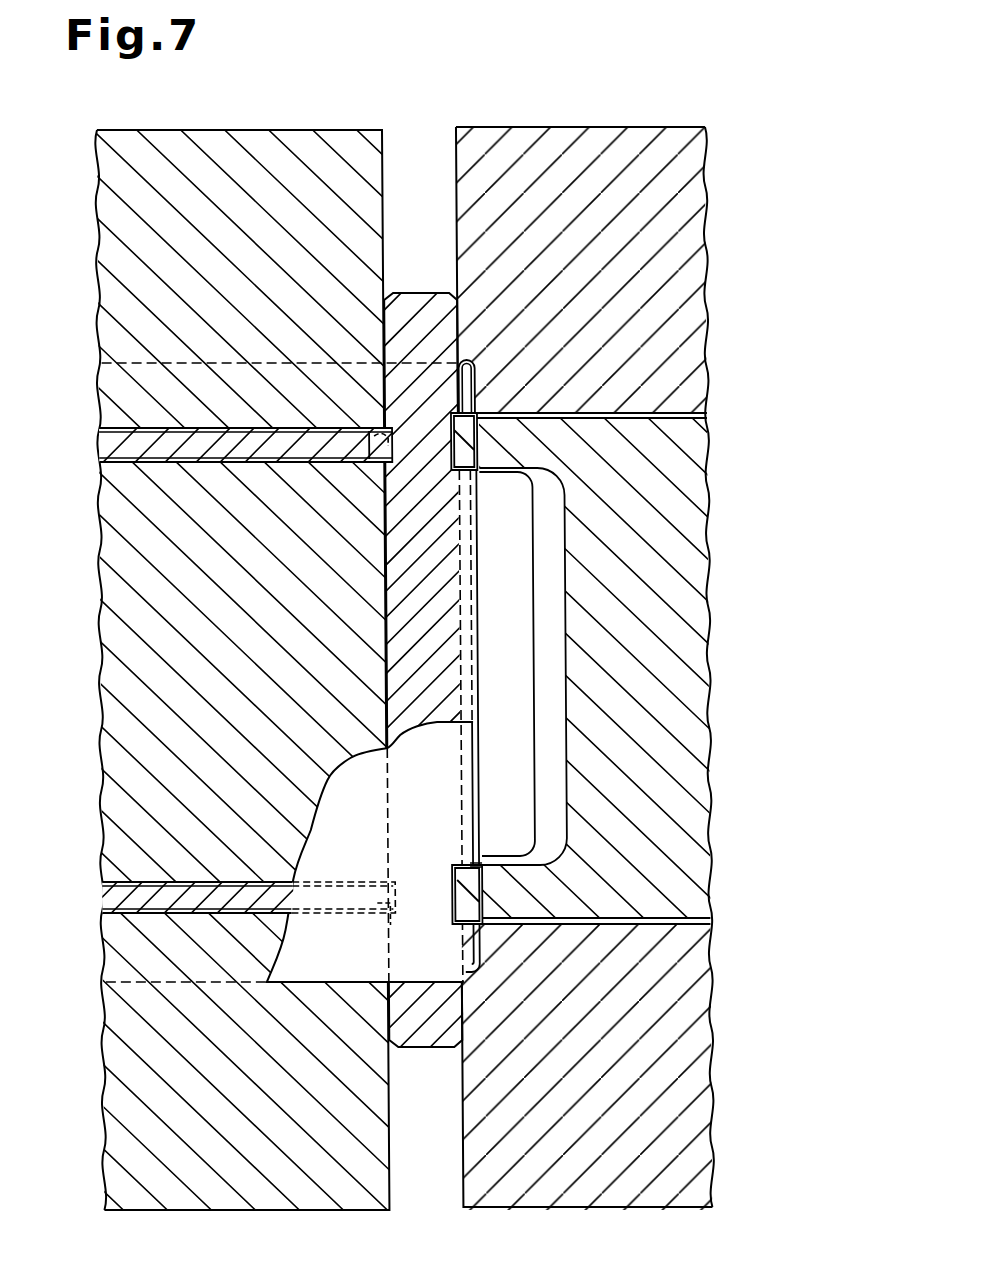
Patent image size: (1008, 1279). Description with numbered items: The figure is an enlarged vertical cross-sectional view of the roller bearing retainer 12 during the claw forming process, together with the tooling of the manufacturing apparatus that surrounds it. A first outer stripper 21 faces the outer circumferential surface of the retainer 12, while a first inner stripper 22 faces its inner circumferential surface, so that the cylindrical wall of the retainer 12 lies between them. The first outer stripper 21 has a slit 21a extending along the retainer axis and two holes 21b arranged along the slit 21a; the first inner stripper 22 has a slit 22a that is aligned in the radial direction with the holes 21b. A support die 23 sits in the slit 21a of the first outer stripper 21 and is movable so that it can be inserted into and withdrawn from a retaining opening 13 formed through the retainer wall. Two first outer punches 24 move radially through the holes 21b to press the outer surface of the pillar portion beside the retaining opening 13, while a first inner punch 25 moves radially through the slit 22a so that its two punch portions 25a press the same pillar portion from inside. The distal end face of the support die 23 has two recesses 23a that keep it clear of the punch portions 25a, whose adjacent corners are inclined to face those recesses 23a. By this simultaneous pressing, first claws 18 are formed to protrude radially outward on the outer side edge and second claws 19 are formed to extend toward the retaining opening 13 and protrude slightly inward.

The retainer 12 is at (425, 293).
The retaining opening 13 is at (434, 968).
The first claw 18 is at (368, 433).
The second claw 19 is at (466, 449).
The first outer stripper 21 is at (340, 131).
The slit 21a is at (291, 983).
The hole 21b is at (211, 458).
The first inner stripper 22 is at (493, 128).
The slit 22a is at (705, 917).
The support die 23 is at (170, 361).
The recess 23a is at (457, 490).
The first outer punch 24 is at (235, 437).
The first inner punch 25 is at (630, 425).
The punch portion 25a is at (468, 407).